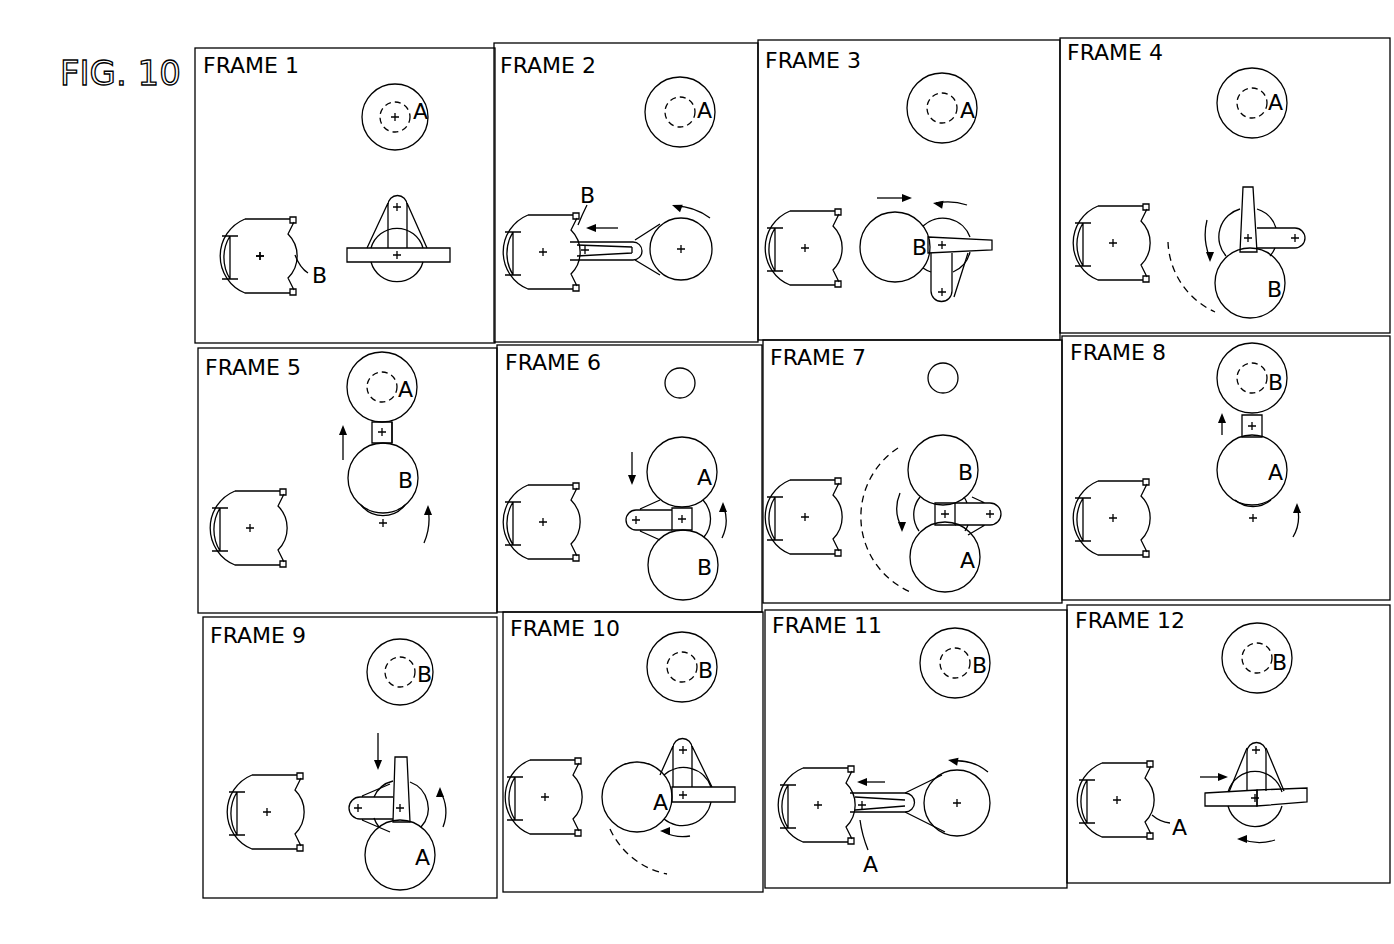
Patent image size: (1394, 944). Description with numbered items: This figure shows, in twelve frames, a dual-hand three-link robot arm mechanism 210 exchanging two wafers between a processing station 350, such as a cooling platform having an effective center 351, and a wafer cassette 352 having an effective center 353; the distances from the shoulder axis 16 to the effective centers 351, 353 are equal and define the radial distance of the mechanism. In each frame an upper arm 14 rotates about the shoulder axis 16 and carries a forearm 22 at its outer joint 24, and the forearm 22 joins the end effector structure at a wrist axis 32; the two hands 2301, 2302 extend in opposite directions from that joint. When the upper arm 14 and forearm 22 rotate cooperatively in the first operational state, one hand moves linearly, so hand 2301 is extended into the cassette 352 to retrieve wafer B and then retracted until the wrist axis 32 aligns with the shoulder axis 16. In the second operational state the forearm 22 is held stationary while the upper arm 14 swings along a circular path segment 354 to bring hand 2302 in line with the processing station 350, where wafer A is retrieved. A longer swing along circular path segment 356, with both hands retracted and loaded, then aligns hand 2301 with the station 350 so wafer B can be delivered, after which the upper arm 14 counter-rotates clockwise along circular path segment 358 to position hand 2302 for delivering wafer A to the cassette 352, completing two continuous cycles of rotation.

The upper arm 14 is at (841, 505).
The shoulder axis 16 is at (856, 524).
The forearm 22 is at (840, 499).
The pin head 24 is at (845, 524).
The wrist axis 32 is at (847, 549).
The robot arm mechanism 210 is at (415, 290).
The hand 2301 is at (856, 529).
The hand 2302 is at (857, 511).
The processing station 350 is at (844, 376).
The effective center 351 is at (398, 118).
The wafer cassette 352 is at (682, 551).
The effective center 353 is at (260, 258).
The circular path segment 354 is at (1183, 292).
The circular path segment 356 is at (902, 445).
The circular path segment 358 is at (645, 868).